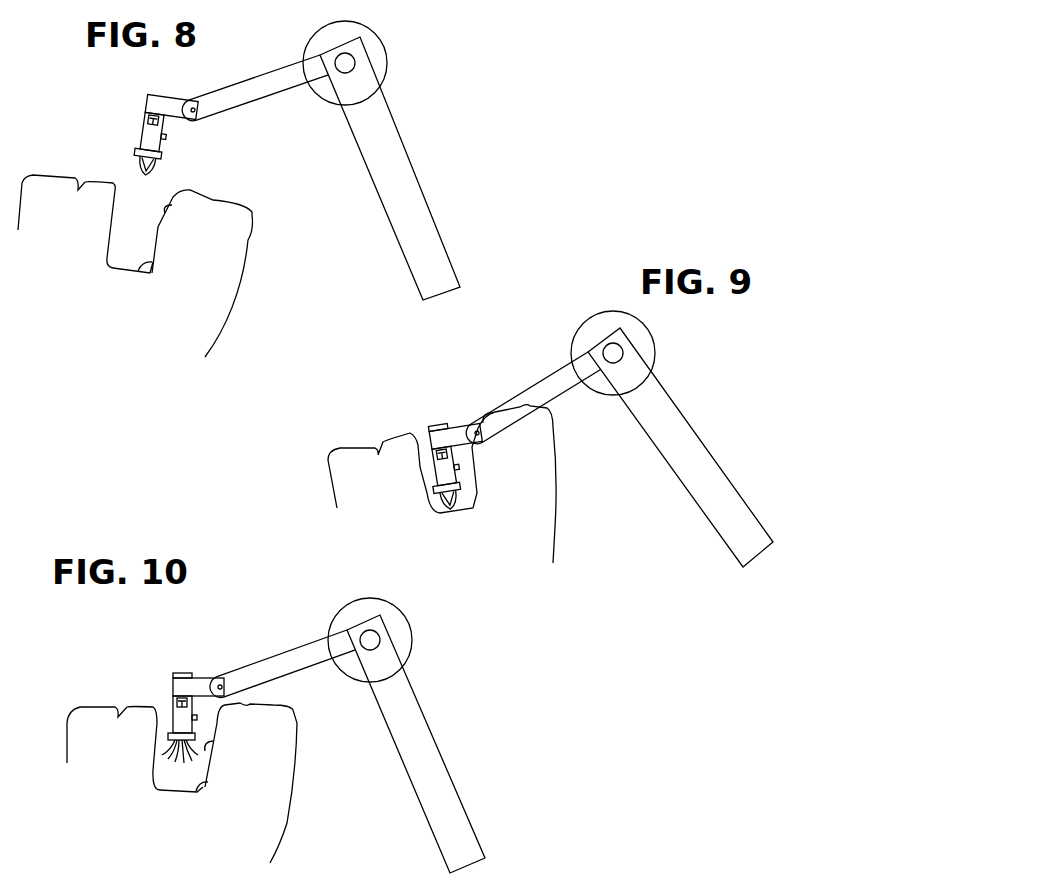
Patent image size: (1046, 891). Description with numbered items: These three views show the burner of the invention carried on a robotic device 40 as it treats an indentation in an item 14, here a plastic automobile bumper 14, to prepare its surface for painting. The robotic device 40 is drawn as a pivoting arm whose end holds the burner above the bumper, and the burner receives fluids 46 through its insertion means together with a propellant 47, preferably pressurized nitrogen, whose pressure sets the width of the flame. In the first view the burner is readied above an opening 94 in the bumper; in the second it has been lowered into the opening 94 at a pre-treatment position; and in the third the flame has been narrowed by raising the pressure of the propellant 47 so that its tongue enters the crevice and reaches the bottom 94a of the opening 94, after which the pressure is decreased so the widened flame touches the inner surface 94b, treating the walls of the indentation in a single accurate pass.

In FIG. 8, the item to be treated 14 is at (62, 175).
In FIG. 9, the item to be treated 14 is at (362, 440).
In FIG. 10, the item to be treated 14 is at (83, 713).
In FIG. 8, the robotic device 40 is at (257, 70).
In FIG. 9, the robotic device 40 is at (560, 360).
In FIG. 10, the robotic device 40 is at (283, 648).
In FIG. 10, the fluids 46 is at (198, 687).
In FIG. 10, the propellant 47 is at (182, 702).
In FIG. 8, the openings 94 is at (118, 222).
In FIG. 10, the openings 94 is at (160, 743).
In FIG. 8, the bottom 94a is at (163, 266).
In FIG. 10, the bottom 94a is at (207, 783).
In FIG. 8, the inner surface 94b is at (168, 210).
In FIG. 10, the inner surface 94b is at (213, 745).